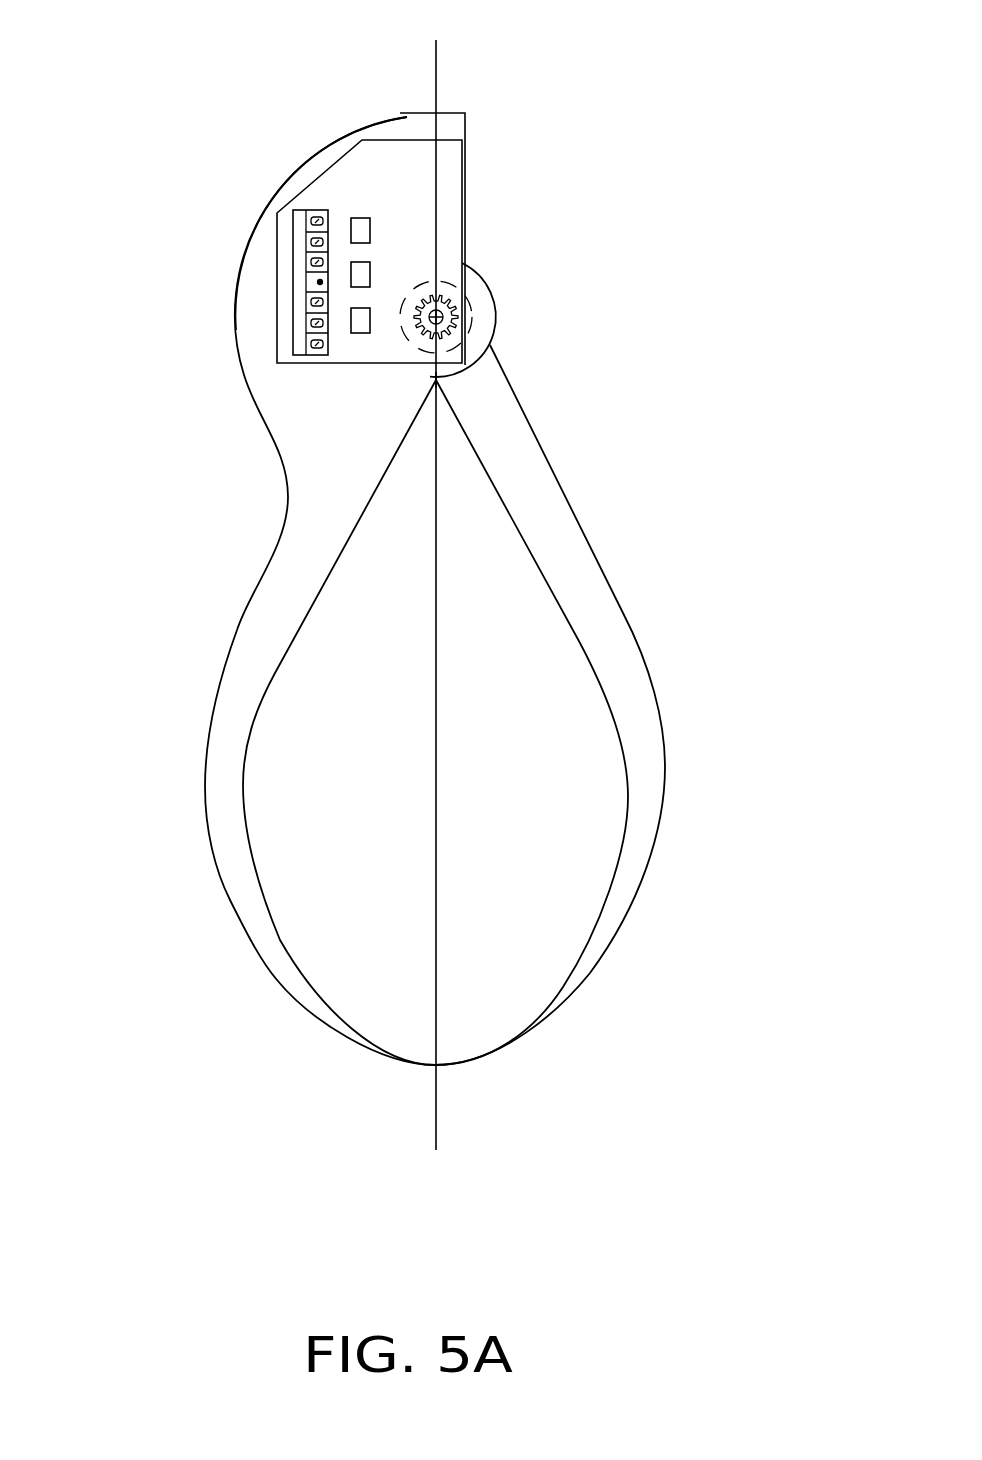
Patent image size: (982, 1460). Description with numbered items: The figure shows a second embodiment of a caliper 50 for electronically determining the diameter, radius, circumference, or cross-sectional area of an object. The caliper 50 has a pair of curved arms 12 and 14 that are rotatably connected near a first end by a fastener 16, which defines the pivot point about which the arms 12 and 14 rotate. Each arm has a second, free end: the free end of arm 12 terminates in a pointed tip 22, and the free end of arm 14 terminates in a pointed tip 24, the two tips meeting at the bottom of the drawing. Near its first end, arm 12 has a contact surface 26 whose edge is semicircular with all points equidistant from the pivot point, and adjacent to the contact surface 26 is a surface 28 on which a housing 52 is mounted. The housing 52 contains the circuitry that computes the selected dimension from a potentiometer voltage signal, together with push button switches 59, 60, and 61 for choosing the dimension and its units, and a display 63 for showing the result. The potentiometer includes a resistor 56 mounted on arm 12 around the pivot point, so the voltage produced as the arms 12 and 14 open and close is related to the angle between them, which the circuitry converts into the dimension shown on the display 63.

The curved arm 12 is at (208, 823).
The curved arm 14 is at (663, 820).
The fastener 16 is at (447, 302).
The pointed tip 22 is at (435, 1065).
The pointed tip 24 is at (435, 1065).
The contact surface 26 is at (497, 298).
The surface 28 is at (235, 270).
The caliper 50 is at (295, 115).
The housing 52 is at (403, 140).
The resistor 56 is at (434, 383).
The push button switch 59 is at (363, 334).
The push button switch 60 is at (370, 270).
The push button switch 61 is at (370, 225).
The display 63 is at (293, 318).